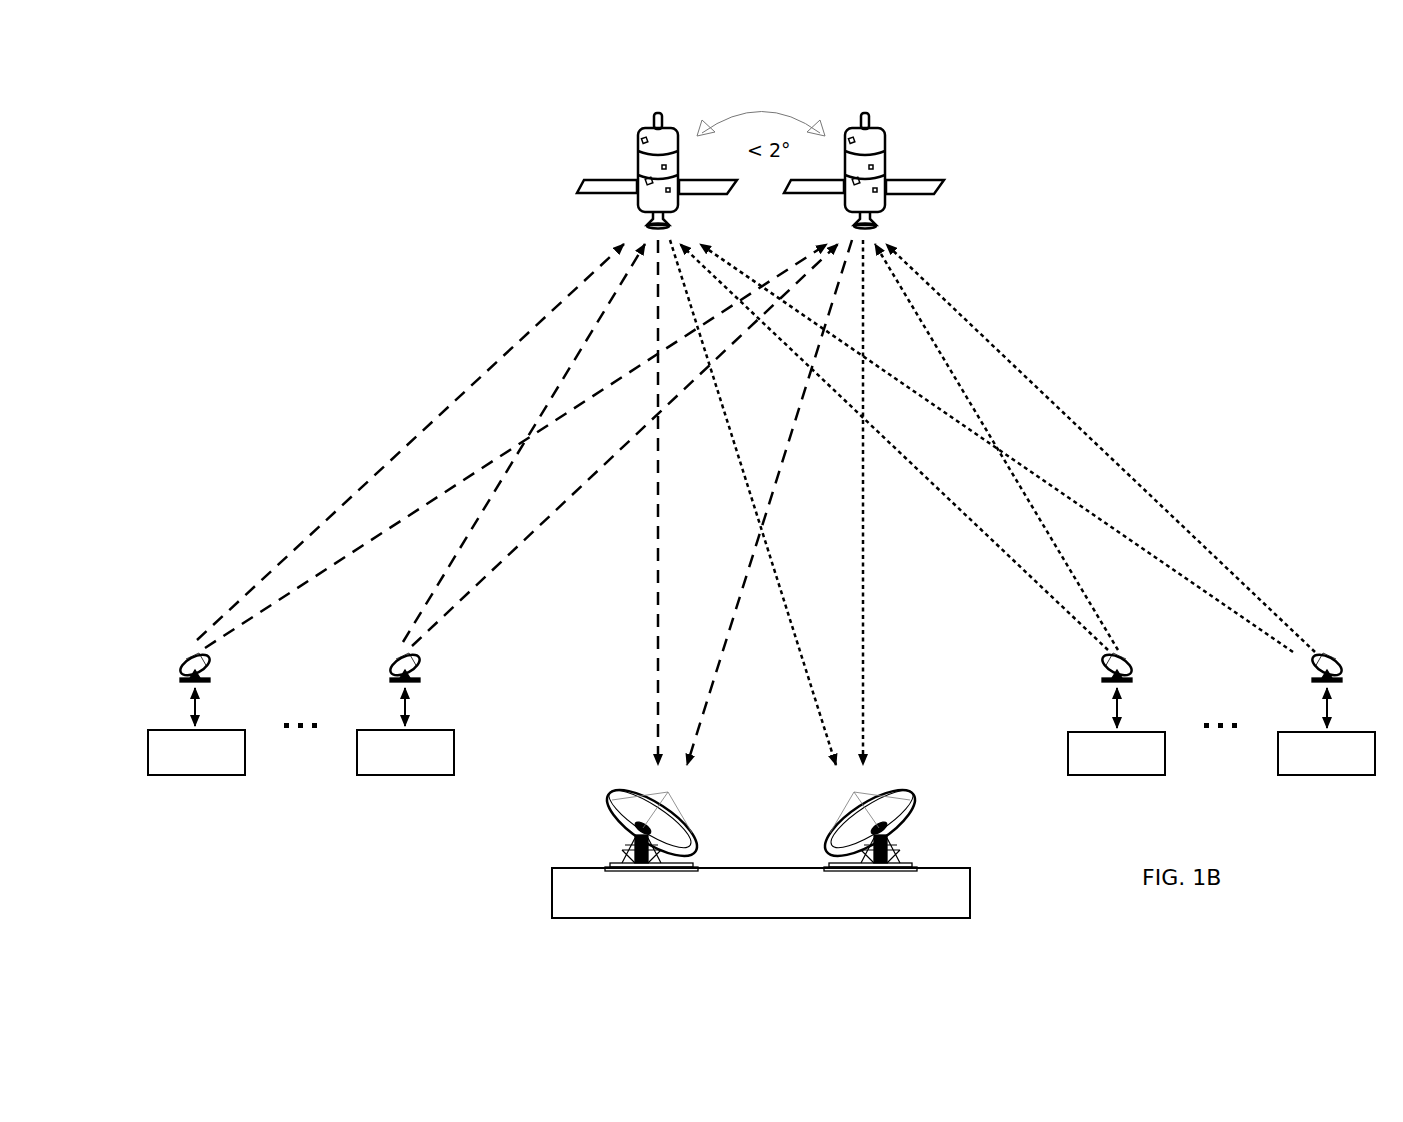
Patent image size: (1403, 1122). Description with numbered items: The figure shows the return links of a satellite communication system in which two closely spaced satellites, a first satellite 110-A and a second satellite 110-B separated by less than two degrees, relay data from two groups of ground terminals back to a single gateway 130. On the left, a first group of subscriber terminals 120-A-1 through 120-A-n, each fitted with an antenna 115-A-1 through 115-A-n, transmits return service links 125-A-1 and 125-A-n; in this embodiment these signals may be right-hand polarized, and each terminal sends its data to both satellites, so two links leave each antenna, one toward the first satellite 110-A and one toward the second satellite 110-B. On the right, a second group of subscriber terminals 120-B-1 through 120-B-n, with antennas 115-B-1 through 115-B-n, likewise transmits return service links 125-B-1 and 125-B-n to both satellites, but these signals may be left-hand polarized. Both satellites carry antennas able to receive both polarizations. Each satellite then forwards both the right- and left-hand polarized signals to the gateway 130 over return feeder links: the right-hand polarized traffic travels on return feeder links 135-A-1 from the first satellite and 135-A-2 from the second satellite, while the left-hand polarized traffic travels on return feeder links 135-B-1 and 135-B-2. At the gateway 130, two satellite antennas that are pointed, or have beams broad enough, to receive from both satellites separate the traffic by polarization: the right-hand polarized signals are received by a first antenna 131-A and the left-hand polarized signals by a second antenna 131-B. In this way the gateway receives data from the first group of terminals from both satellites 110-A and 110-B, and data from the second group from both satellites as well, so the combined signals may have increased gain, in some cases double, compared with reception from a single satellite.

The first satellite 110-A is at (638, 150).
The second satellite 110-B is at (885, 150).
The antenna of first group subscriber terminal 115-A-1 is at (182, 674).
The antenna of first group subscriber terminal 115-A-n is at (393, 674).
The antenna of second group subscriber terminal 115-B-1 is at (1105, 679).
The antenna of second group subscriber terminal 115-B-n is at (1315, 679).
The subscriber terminal of first group 120-A-1 is at (232, 762).
The subscriber terminal of first group 120-A-n is at (440, 762).
The subscriber terminal of second group 120-B-1 is at (1150, 762).
The subscriber terminal of second group 120-B-n is at (1362, 762).
The return service link 125-A-1 is at (330, 521).
The return service link 125-A-n is at (430, 602).
The return service link 125-B-1 is at (1095, 610).
The return service link 125-B-n is at (1212, 580).
The gateway 130 is at (962, 915).
The first antenna 131-A is at (690, 833).
The second antenna 131-B is at (900, 850).
The return feeder link 135-A-1 is at (658, 660).
The return feeder link 135-A-2 is at (725, 640).
The return feeder link 135-B-1 is at (772, 560).
The return feeder link 135-B-2 is at (863, 570).